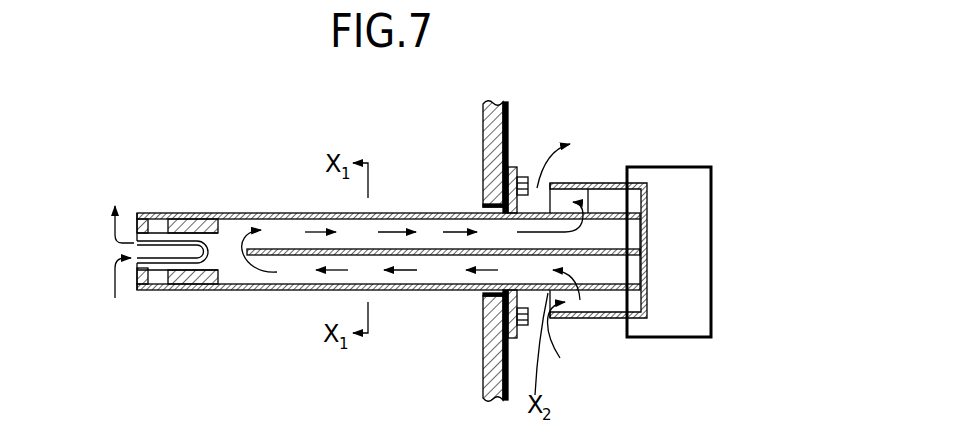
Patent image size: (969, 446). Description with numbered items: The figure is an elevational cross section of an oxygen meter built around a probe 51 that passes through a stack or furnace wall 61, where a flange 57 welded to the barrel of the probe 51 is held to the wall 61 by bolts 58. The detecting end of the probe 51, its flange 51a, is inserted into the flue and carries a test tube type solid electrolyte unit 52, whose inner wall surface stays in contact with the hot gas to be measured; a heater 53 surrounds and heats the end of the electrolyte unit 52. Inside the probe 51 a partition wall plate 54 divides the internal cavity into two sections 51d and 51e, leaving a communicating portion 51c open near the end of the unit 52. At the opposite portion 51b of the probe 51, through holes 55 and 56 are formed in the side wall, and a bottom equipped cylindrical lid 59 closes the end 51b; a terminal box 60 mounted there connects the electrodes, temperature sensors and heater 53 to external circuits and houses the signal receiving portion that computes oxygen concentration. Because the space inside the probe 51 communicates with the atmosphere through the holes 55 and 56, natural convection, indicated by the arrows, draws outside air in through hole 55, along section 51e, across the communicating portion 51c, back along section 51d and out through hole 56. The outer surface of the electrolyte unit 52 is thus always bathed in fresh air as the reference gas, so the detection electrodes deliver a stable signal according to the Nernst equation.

The probe 51 is at (387, 213).
The flange 51a is at (134, 213).
The portion opposite to the end 51b is at (638, 265).
The communicating portion 51c is at (228, 250).
The section 51d is at (290, 233).
The section 51e is at (400, 277).
The test tube type solid electrolyte unit 52 is at (162, 290).
The heater 53 is at (195, 213).
The partition wall plate 54 is at (430, 254).
The through hole 55 is at (583, 292).
The through hole 56 is at (590, 184).
The flange 57 is at (514, 167).
The bolts 58 is at (540, 178).
The bottom equipped cylindrical lid 59 is at (612, 184).
The terminal box 60 is at (683, 175).
The stack or furnace wall 61 is at (483, 110).